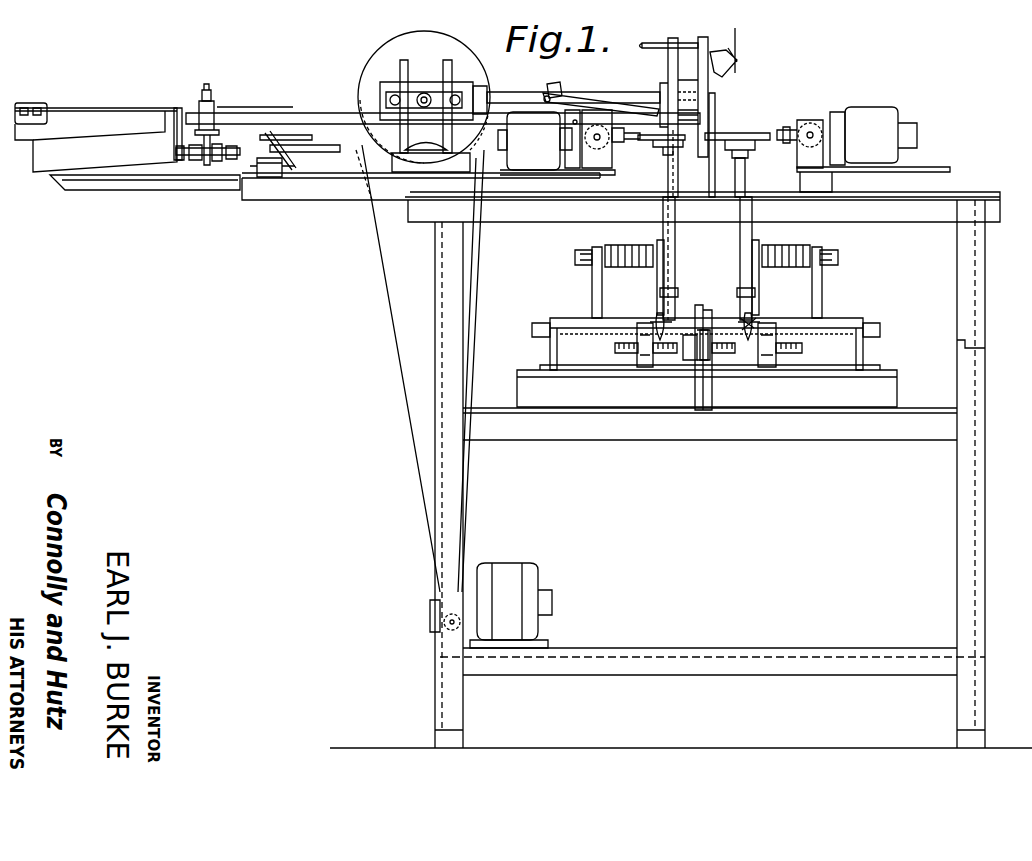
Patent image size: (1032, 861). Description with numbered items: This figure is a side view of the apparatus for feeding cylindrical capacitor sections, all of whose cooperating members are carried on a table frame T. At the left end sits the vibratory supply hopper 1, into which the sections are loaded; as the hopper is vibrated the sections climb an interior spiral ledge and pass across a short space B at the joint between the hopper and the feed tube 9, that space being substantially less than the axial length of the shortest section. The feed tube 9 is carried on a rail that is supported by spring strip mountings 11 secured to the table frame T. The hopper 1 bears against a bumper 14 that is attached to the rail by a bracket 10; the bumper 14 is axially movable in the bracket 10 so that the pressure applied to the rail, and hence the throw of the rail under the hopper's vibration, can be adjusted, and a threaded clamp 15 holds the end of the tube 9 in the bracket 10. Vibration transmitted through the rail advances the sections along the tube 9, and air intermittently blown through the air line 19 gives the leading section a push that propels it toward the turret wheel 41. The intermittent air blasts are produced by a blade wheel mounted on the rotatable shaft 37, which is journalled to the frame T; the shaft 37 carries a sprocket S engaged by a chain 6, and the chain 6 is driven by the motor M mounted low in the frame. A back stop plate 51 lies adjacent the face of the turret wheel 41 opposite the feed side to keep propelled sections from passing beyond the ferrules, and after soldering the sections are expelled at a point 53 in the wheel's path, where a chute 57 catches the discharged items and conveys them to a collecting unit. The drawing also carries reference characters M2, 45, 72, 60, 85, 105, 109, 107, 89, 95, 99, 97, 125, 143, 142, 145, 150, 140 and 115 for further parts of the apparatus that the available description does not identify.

The vibratory supply hopper 1 is at (45, 178).
The space between spiral ledge and tube B is at (182, 105).
The bumper 14 is at (195, 160).
The bracket 10 is at (213, 100).
The threaded clamp 15 is at (206, 84).
The spring strip mountings 11 is at (275, 175).
The table frame T is at (313, 195).
The sprocket S is at (384, 72).
The rotatable shaft 37 is at (424, 108).
The chain 6 is at (380, 285).
The motor M is at (511, 605).
The motor M2 is at (724, 149).
The rod 45 is at (528, 80).
The air line 19 is at (578, 92).
The feed tube 9 is at (607, 112).
The pulley 72 is at (626, 140).
The expulsion point 53 is at (655, 43).
The turret wheel 41 is at (698, 40).
The chute 57 is at (738, 52).
The back stop plate 51 is at (716, 97).
The slide table 60 is at (758, 135).
The post 85 is at (673, 178).
The spring 105 is at (612, 244).
The nut 109 is at (574, 250).
The rod 107 is at (596, 283).
The rod 89 is at (658, 283).
The frame 95 is at (574, 318).
The roller 99 is at (656, 316).
The pin 97 is at (748, 314).
The center bar 125 is at (709, 298).
The rack 143 is at (615, 352).
The rack 142 is at (800, 352).
The block 145 is at (637, 362).
The rod 150 is at (700, 368).
The block 140 is at (738, 362).
The base 115 is at (884, 370).